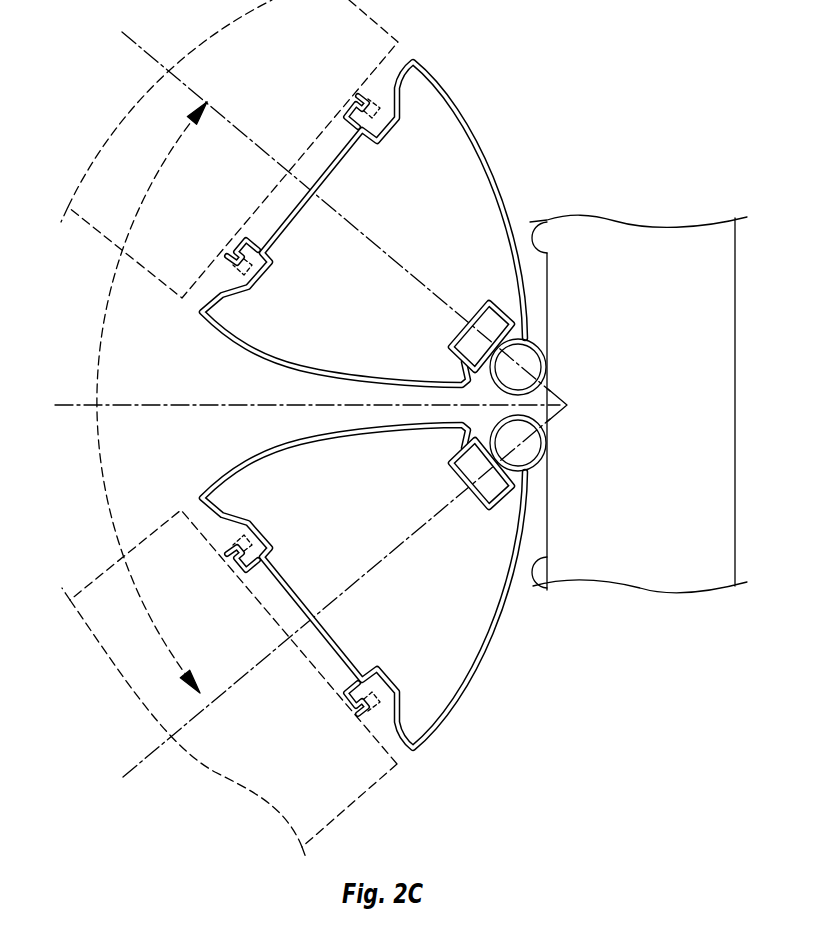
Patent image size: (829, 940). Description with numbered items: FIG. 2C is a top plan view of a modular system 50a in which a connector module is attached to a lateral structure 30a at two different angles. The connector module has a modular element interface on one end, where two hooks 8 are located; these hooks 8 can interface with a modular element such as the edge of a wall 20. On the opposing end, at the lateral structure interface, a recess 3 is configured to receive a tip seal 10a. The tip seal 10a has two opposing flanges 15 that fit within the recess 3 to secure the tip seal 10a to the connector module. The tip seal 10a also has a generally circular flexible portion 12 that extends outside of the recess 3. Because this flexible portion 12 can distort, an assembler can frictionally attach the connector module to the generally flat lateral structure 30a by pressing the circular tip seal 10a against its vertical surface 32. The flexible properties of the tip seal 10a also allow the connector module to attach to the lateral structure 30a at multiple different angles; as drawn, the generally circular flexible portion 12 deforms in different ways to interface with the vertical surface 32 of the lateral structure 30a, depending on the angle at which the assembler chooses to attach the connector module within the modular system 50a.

The recess 3 is at (557, 660).
The hooks 8 is at (344, 94).
The tip seal 10a is at (552, 363).
The generally circular flexible portion 12 is at (557, 613).
The opposing flanges 15 is at (557, 635).
The wall 20 is at (93, 230).
The lateral structure 30a is at (668, 205).
The vertical surface 32 is at (534, 223).
The modular system 50a is at (585, 70).